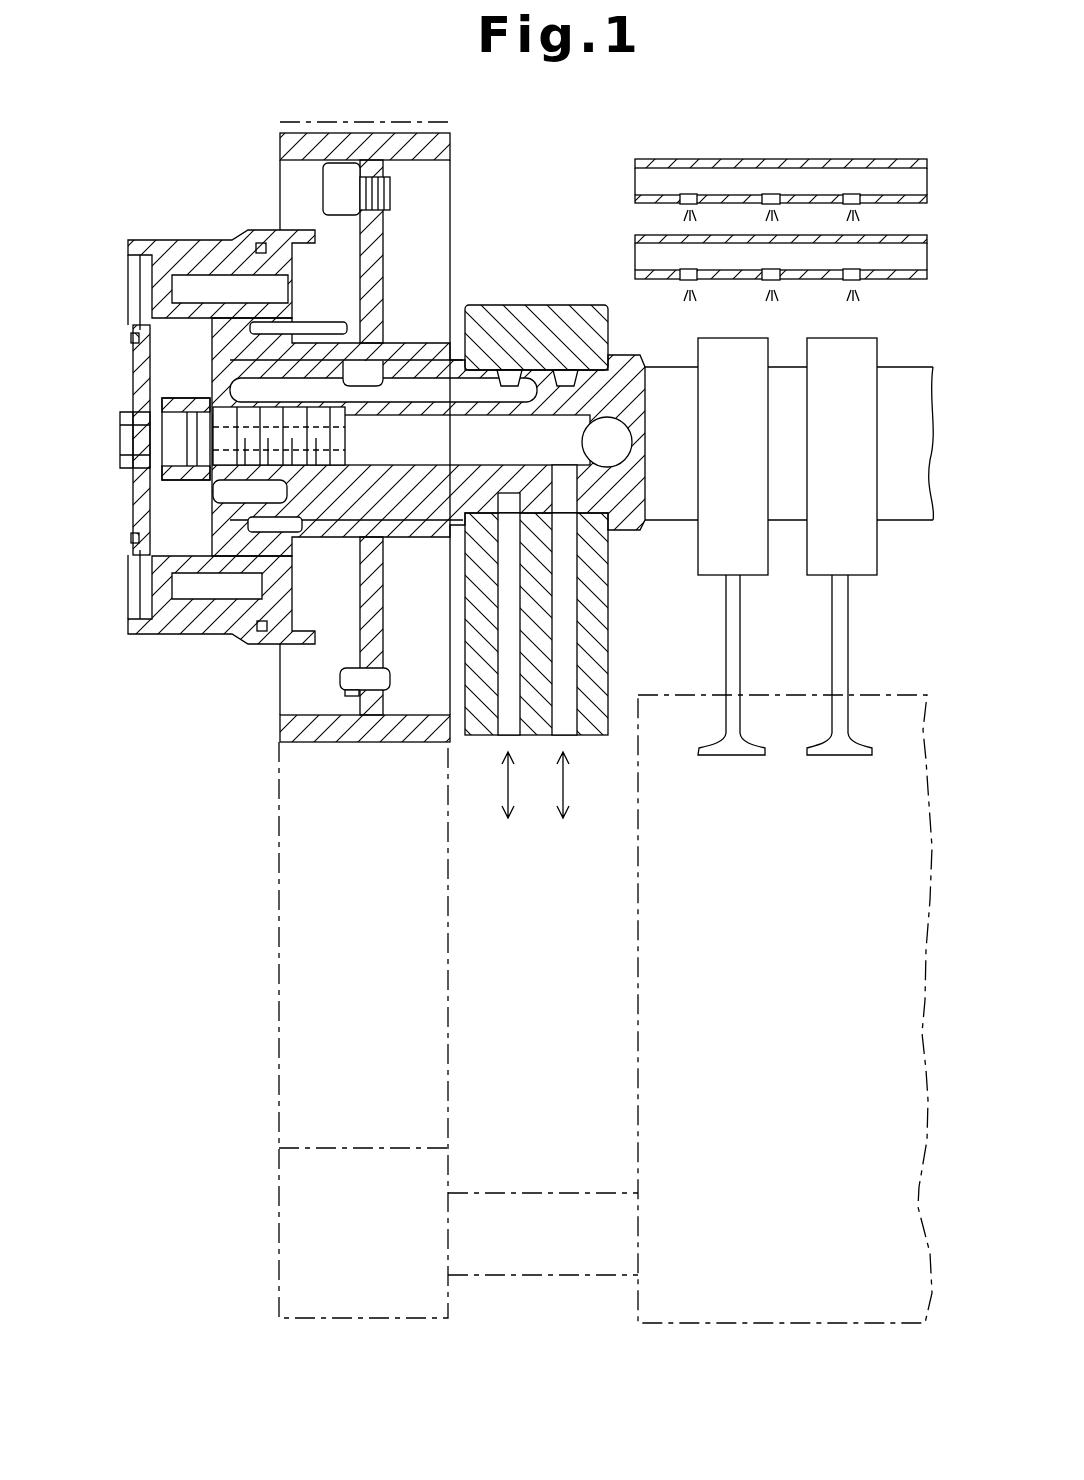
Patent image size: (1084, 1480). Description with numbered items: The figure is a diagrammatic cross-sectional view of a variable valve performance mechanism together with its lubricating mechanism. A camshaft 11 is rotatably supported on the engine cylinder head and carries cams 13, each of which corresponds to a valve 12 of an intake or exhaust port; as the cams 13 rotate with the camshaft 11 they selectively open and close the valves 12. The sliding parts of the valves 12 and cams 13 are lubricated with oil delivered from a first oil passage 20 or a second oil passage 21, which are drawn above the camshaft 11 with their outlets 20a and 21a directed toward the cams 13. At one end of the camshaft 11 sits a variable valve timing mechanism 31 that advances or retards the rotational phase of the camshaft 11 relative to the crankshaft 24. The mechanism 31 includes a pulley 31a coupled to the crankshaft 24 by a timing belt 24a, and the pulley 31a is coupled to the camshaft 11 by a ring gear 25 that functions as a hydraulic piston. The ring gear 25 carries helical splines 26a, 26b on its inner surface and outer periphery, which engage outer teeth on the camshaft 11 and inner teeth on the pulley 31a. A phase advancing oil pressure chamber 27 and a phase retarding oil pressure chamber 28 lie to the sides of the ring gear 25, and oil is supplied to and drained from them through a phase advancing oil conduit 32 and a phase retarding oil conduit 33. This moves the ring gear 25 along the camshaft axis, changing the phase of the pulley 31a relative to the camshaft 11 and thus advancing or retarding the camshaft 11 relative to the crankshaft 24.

The camshaft 11 is at (916, 367).
The valve 12 is at (825, 757).
The cam 13 is at (807, 577).
The first oil passage 20 is at (646, 159).
The oil injection holes 20a is at (862, 196).
The second oil passage 21 is at (646, 236).
The oil injection holes 21a is at (843, 279).
The crankshaft 24 is at (545, 1277).
The timing belt 24a is at (278, 913).
The ring gear 25 is at (158, 288).
The helical spline 26a is at (290, 570).
The helical spline 26b is at (197, 239).
The phase advancing oil pressure chamber 27 is at (342, 606).
The phase retarding oil pressure chamber 28 is at (141, 635).
The variable valve timing mechanism 31 is at (129, 241).
The pulley 31a is at (450, 131).
The phase advancing oil conduit 32 is at (498, 738).
The phase retarding oil conduit 33 is at (577, 738).